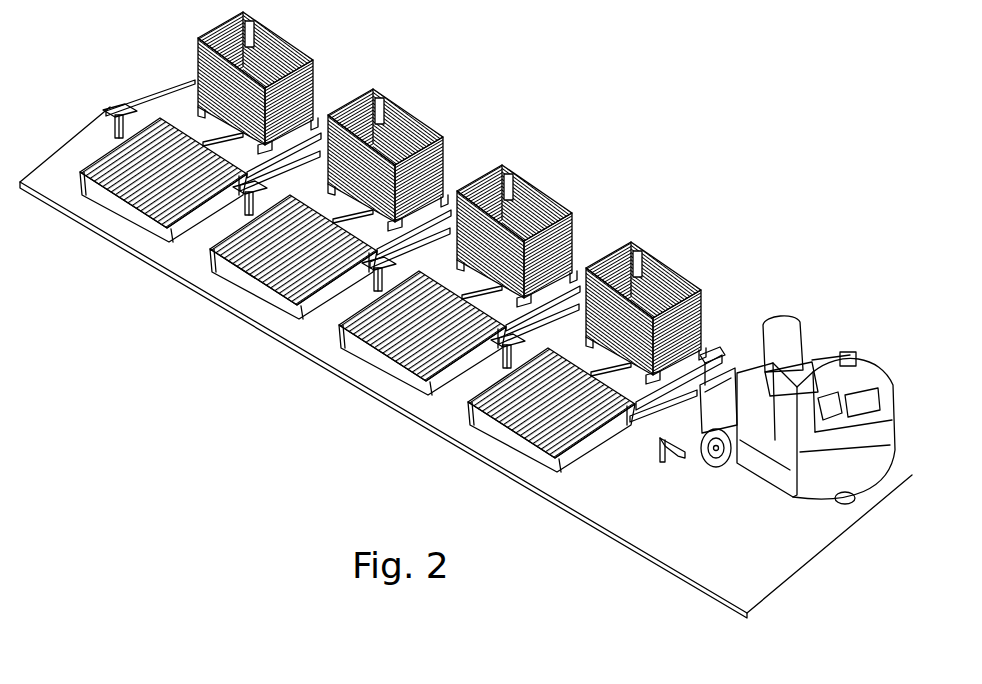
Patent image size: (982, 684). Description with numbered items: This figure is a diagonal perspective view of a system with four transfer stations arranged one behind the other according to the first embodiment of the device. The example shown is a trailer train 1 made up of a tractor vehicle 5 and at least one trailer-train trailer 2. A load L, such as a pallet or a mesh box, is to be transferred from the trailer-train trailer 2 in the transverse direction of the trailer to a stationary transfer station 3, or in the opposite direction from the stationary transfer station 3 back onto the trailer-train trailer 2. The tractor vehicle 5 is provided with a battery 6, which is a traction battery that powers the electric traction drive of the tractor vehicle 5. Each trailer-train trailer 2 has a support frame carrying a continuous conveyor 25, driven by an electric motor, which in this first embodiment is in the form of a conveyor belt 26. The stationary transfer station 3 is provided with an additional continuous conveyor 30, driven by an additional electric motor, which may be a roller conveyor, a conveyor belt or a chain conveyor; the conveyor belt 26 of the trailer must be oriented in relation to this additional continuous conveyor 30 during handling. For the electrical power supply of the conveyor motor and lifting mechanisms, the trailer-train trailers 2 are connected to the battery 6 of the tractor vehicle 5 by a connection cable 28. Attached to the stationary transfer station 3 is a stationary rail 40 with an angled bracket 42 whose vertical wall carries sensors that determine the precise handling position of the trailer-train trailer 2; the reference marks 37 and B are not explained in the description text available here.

The trailer train 1 is at (466, 328).
The trailer-train trailer 2 is at (797, 388).
The stationary transfer station 3 is at (496, 450).
The tractor vehicle 5 is at (852, 397).
The battery 6 is at (748, 425).
The continuous conveyor 25 is at (163, 127).
The conveyor belt 26 is at (193, 117).
The connection cable 28 is at (740, 340).
The additional continuous conveyor 30 is at (365, 352).
The roller track 37 is at (377, 343).
The stationary rail 40 is at (633, 541).
The angled bracket 42 is at (662, 440).
The floor B is at (466, 366).
The load L is at (558, 197).